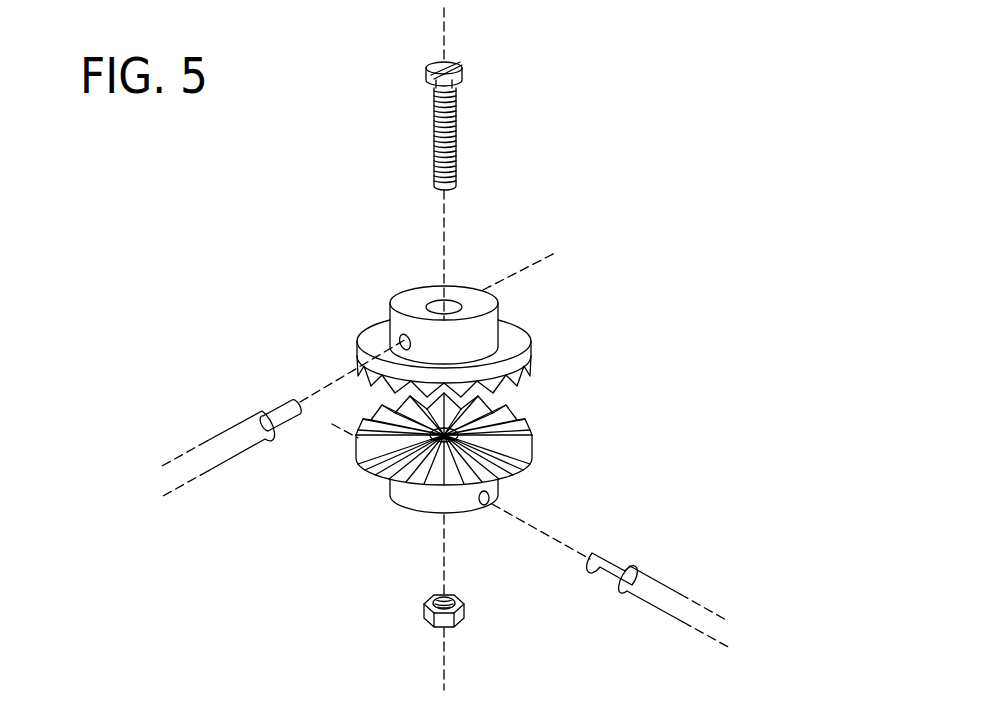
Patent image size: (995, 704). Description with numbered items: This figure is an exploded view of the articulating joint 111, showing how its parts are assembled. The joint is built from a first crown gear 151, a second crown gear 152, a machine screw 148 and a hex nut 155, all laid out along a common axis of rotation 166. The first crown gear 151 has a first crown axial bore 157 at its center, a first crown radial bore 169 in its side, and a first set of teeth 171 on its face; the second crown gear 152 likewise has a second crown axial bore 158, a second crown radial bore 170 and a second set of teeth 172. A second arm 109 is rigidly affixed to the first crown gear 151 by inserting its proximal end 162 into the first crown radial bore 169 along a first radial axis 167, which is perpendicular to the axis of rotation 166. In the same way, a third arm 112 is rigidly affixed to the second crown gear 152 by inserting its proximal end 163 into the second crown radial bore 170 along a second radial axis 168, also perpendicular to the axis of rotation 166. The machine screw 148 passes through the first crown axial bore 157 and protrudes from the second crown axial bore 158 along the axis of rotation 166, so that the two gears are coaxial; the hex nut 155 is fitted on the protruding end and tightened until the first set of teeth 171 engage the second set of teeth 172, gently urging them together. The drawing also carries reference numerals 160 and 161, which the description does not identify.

The articulating joint 111 is at (630, 57).
The machine screw 148 is at (466, 71).
The threads 160 is at (464, 112).
The axis of rotation 166 is at (449, 673).
The first radial axis 167 is at (557, 252).
The second radial axis 168 is at (331, 425).
The first crown gear 151 is at (531, 346).
The first crown axial bore 157 is at (472, 309).
The first crown radial bore 169 is at (389, 338).
The first set of teeth 171 is at (506, 395).
The second crown gear 152 is at (531, 462).
The second crown axial bore 158 is at (436, 430).
The second set of teeth 172 is at (481, 417).
The second crown radial bore 170 is at (488, 508).
The second arm 109 is at (228, 430).
The proximal end 162 is at (284, 397).
The third arm 112 is at (665, 580).
The proximal end 163 is at (610, 550).
The hex nut 155 is at (466, 606).
The threaded hole of nut 161 is at (434, 599).